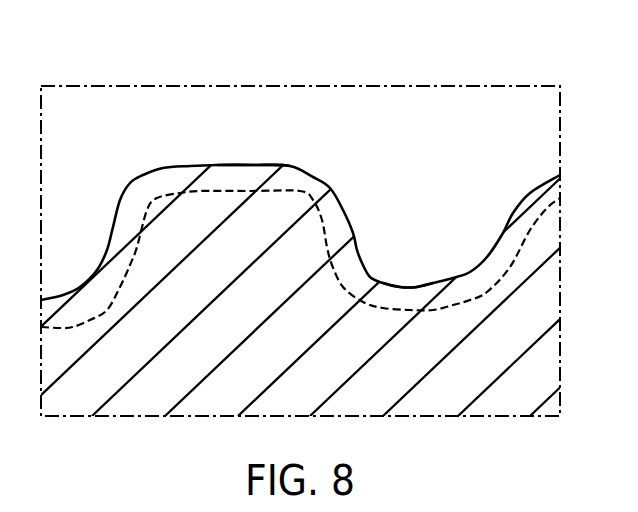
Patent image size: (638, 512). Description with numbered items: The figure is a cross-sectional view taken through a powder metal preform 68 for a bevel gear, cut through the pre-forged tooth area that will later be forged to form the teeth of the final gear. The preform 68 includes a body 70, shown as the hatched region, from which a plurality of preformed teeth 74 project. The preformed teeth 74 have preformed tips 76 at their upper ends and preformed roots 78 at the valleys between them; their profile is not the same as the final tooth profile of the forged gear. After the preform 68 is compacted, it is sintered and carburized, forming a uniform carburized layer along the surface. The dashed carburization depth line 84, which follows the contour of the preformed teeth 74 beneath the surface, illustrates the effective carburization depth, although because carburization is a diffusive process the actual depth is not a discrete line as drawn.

The preform 68 is at (437, 153).
The body 70 is at (502, 406).
The preformed teeth 74 is at (362, 213).
The preformed tips 76 is at (237, 164).
The preformed roots 78 is at (423, 287).
The carburization depth line 84 is at (455, 309).